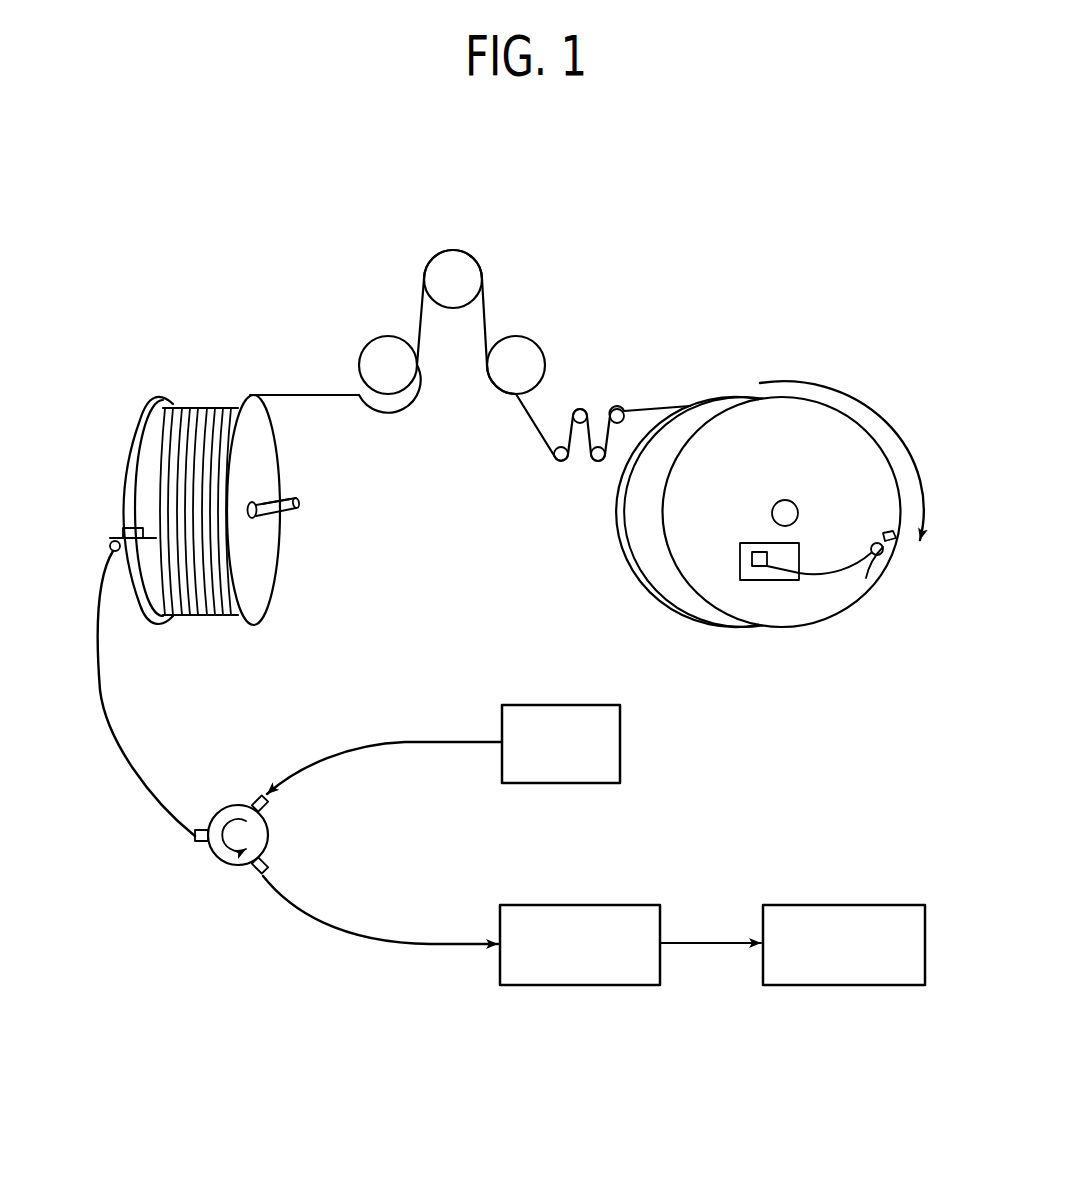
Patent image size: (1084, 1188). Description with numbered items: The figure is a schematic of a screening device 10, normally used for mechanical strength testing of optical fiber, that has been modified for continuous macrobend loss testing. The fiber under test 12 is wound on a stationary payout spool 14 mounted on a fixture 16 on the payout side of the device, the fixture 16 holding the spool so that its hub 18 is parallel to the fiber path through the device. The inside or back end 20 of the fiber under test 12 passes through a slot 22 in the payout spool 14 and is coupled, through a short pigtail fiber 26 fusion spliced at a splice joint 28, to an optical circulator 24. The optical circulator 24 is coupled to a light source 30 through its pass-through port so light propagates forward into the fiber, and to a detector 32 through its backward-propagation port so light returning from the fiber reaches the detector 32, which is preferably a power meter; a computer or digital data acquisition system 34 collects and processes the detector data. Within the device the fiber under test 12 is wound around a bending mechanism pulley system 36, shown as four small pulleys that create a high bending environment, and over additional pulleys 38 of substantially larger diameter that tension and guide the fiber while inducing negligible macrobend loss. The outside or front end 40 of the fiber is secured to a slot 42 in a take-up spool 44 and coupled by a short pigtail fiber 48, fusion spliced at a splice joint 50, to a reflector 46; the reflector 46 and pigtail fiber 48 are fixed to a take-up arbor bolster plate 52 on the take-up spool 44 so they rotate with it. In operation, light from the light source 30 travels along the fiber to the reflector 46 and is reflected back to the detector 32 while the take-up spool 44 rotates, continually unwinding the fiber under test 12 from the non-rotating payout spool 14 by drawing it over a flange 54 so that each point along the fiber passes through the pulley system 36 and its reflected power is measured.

The screening device 10 is at (503, 192).
The fiber under test 12 is at (305, 395).
The payout spool 14 is at (286, 583).
The fixture 16 is at (292, 512).
The hub 18 is at (272, 506).
The back end 20 is at (122, 537).
The slot 22 is at (127, 528).
The optical circulator 24 is at (236, 866).
The pigtail fiber 26 is at (98, 660).
The splice joint 28 is at (110, 545).
The light source 30 is at (620, 741).
The detector 32 is at (580, 985).
The computer or digital data acquisition system 34 is at (848, 985).
The bending mechanism pulley system 36 is at (597, 409).
The additional pulleys 38 is at (490, 277).
The front end 40 is at (893, 552).
The slot 42 is at (898, 540).
The take-up spool 44 is at (706, 383).
The reflector 46 is at (762, 567).
The pigtail fiber 48 is at (840, 576).
The splice joint 50 is at (866, 576).
The take-up arbor bolster plate 52 is at (776, 550).
The flange 54 is at (250, 395).